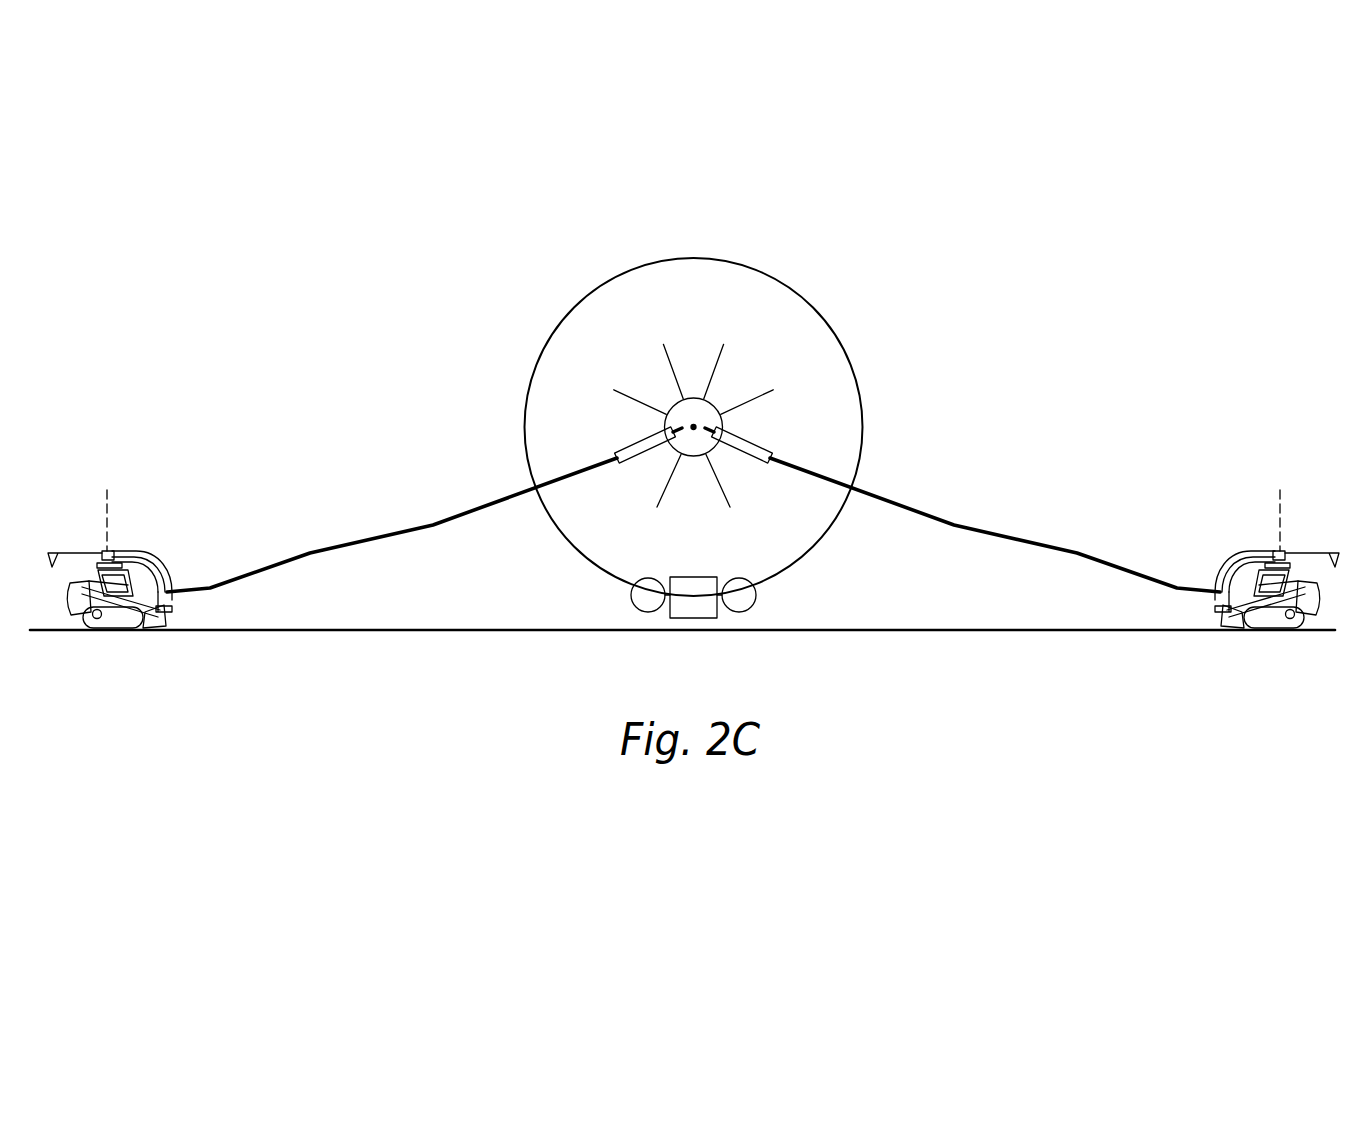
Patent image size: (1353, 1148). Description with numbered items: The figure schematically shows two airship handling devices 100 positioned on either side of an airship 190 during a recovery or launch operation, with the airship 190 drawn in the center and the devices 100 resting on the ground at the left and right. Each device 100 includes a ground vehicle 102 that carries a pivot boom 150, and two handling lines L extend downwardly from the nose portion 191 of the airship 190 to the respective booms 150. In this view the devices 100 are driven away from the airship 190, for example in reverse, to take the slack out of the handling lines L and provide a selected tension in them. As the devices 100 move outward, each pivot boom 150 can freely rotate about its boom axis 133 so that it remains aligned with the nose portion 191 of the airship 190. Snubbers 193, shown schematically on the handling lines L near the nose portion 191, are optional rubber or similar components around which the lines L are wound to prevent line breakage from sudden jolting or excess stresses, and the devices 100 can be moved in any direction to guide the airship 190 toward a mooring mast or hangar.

The airship handling device 100 is at (187, 484).
The ground vehicle 102 is at (108, 633).
The boom axis 133 is at (107, 505).
The pivot boom 150 is at (164, 572).
The airship 190 is at (585, 295).
The nose portion 191 is at (703, 423).
The snubber 193 is at (627, 444).
The handling line L is at (433, 522).